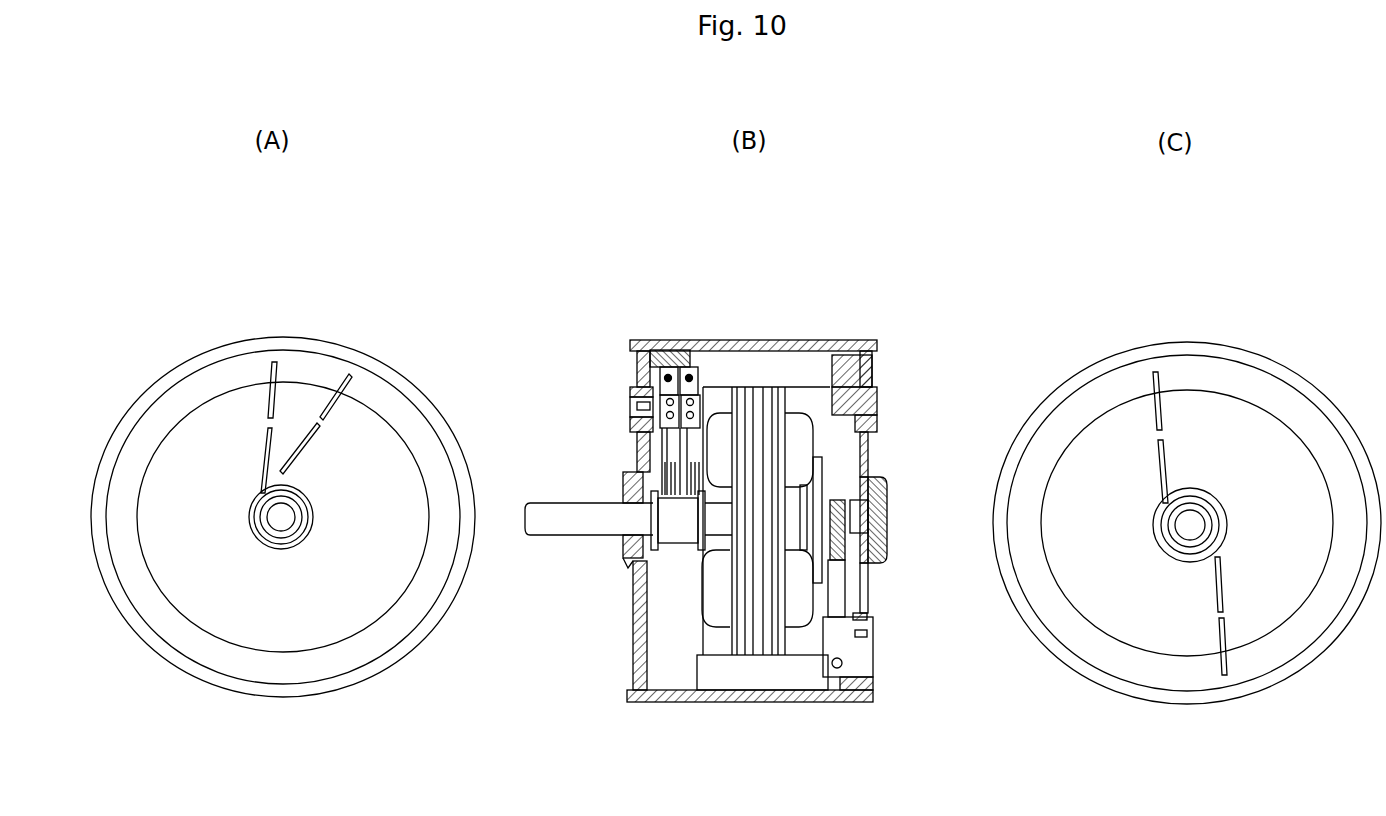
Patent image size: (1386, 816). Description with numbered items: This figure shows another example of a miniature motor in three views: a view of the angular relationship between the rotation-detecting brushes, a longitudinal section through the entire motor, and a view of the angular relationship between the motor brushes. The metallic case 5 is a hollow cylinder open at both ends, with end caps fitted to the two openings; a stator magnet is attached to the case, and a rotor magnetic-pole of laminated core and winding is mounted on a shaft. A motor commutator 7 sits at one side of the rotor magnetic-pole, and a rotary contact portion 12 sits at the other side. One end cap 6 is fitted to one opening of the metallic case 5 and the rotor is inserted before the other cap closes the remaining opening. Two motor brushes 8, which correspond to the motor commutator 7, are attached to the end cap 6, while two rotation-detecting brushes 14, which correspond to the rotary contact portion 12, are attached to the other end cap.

The metallic case 5 is at (748, 343).
The end cap 6 is at (885, 405).
The motor commutator 7 is at (868, 467).
The motor brushes 8 is at (833, 593).
The rotary contact portion 12 is at (680, 518).
The rotation-detecting brushes 14 is at (262, 485).